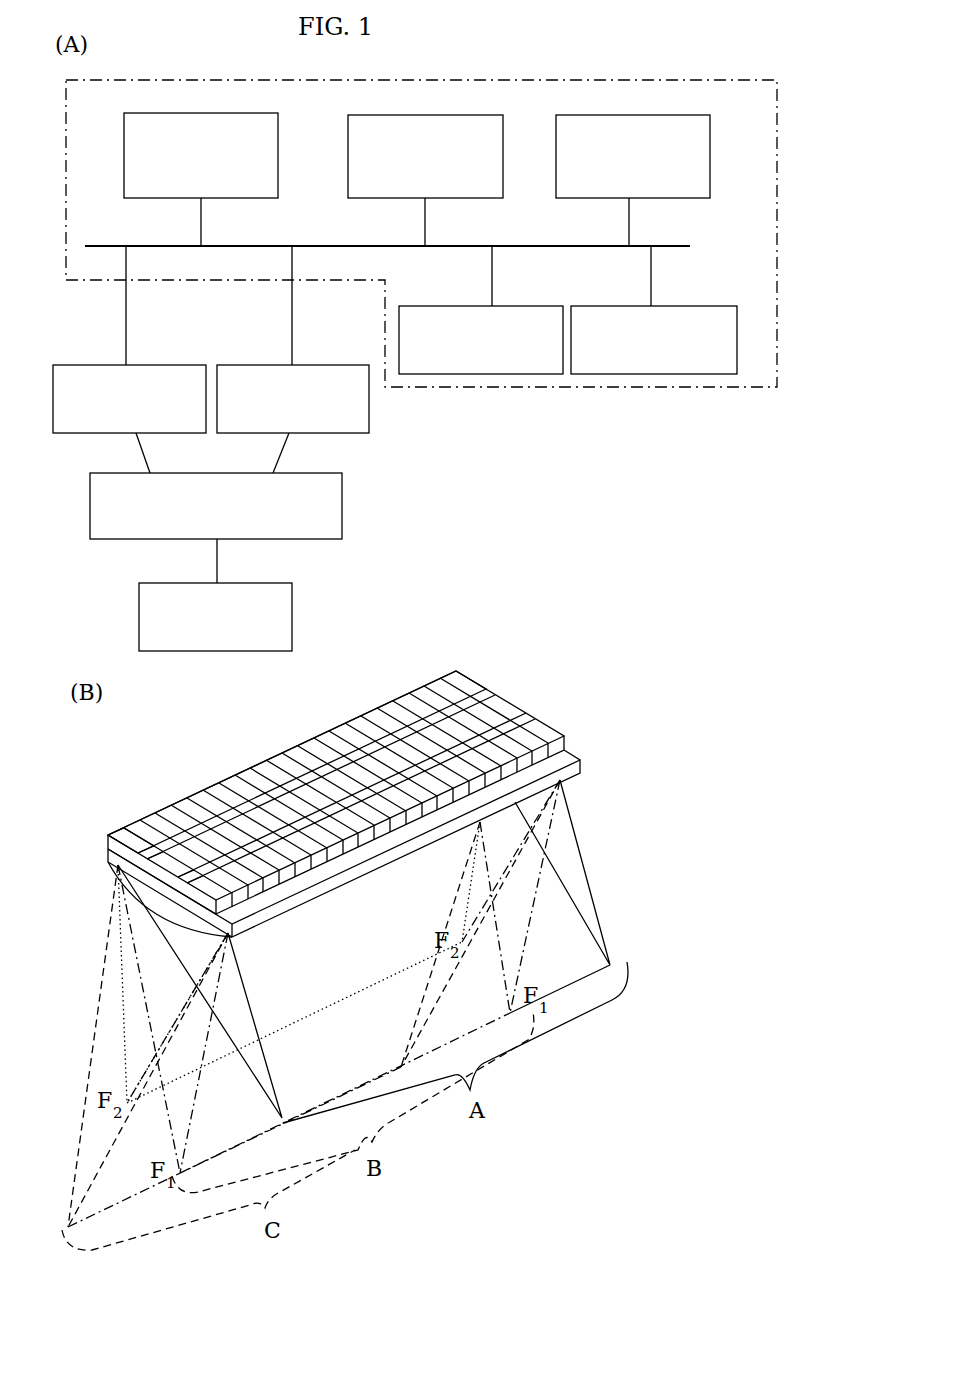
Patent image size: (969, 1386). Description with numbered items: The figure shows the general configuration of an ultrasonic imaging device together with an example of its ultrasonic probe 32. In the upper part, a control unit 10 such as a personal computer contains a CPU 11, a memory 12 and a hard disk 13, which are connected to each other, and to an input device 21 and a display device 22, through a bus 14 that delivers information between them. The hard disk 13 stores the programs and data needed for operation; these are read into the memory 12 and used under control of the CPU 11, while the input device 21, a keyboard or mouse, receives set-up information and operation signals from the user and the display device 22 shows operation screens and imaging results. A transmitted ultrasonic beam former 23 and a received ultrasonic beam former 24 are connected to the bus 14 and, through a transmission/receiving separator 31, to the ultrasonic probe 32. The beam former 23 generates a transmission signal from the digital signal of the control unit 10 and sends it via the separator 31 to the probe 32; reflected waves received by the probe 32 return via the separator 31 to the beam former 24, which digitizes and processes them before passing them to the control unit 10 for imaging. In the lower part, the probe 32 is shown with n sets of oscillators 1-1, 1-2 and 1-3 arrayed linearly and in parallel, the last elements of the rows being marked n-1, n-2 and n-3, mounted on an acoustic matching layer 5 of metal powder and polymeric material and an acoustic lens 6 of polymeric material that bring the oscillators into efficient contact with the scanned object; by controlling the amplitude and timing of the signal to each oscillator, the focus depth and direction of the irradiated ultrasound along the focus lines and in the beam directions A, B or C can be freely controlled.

The control unit 10 is at (530, 85).
The CPU 11 is at (269, 168).
The memory 12 is at (497, 185).
The hard disk 13 is at (704, 183).
The bus 14 is at (275, 245).
The input device 21 is at (521, 318).
The display device 22 is at (669, 318).
The transmitted ultrasonic beam former 23 is at (141, 372).
The received ultrasonic beam former 24 is at (295, 372).
The transmission/receiving separator 31 is at (338, 515).
The ultrasonic probe 32 is at (288, 620).
The oscillator 1-1 is at (463, 682).
The oscillator 1-2 is at (508, 710).
The oscillator 1-3 is at (549, 733).
The n-th transducer element (row 1) n-1 is at (138, 830).
The n-th transducer element (row 2) n-2 is at (178, 855).
The n-th transducer element (row 3) n-3 is at (227, 885).
The acoustic matching layer 5 is at (578, 766).
The acoustic lens 6 is at (193, 912).